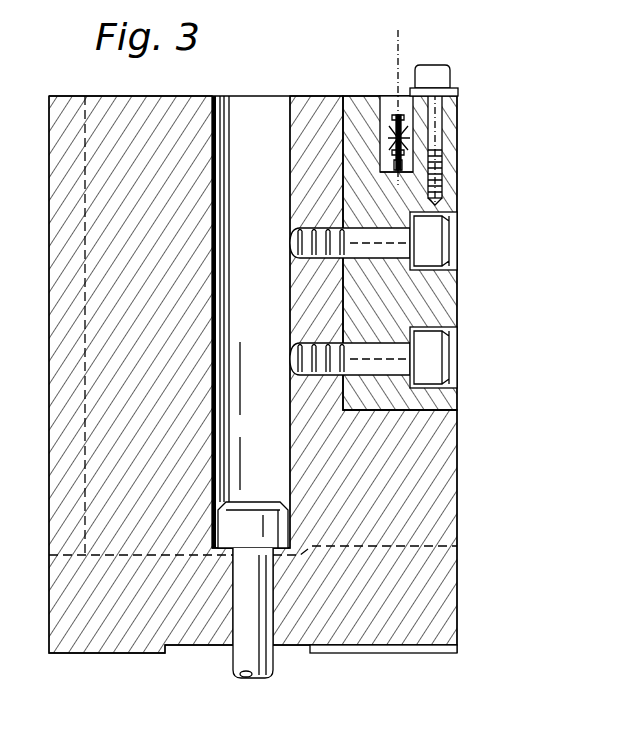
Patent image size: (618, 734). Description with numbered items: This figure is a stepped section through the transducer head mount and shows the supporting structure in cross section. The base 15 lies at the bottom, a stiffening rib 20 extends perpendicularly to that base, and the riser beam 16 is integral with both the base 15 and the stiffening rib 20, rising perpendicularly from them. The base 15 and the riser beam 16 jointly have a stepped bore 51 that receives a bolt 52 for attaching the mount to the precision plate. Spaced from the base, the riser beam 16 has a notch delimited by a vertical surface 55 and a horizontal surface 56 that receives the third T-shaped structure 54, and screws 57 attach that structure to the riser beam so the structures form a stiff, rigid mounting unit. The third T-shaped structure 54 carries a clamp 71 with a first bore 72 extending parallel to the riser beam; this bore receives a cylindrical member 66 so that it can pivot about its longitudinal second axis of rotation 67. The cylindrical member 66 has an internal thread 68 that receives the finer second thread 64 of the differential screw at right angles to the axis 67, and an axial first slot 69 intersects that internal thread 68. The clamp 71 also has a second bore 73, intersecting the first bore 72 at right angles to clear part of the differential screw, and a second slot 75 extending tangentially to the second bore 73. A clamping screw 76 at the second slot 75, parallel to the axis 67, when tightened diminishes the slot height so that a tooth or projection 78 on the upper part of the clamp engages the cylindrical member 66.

The base 15 is at (50, 611).
The riser beam 16 is at (458, 476).
The stiffening rib 20 is at (50, 414).
The stepped bore 51 is at (238, 588).
The bolt 52 is at (248, 651).
The third T-shaped structure 54 is at (462, 299).
The vertical surface 55 is at (345, 277).
The horizontal surface 56 is at (380, 412).
The screws 57 is at (398, 268).
The second thread 64 is at (392, 150).
The cylindrical member 66 is at (377, 96).
The second axis of rotation 67 is at (400, 48).
The internal thread 68 is at (385, 135).
The first slot 69 is at (395, 177).
The clamp 71 is at (457, 183).
The first bore 72 is at (390, 167).
The second bore 73 is at (406, 177).
The second slot 75 is at (440, 153).
The clamping screw 76 is at (458, 92).
The tooth or projection 78 is at (413, 140).